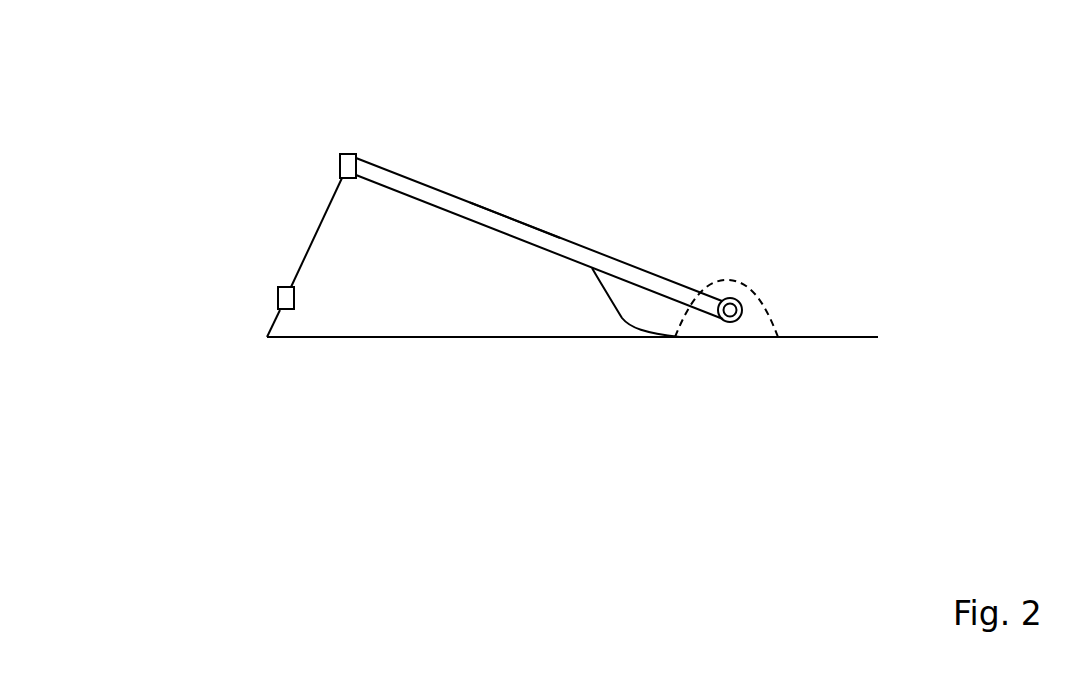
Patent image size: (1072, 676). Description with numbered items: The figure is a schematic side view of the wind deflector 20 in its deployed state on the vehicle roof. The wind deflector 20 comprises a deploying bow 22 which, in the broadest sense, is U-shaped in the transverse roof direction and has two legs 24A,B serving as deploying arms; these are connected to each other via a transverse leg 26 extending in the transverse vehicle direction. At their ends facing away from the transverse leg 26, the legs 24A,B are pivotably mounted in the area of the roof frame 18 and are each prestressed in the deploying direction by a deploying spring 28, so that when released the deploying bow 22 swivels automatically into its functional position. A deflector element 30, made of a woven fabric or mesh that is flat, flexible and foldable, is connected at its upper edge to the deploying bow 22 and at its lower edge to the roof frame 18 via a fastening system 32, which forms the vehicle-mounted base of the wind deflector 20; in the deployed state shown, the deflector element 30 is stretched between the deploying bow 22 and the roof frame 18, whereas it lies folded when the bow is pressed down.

The roof frame 18 is at (397, 337).
The wind deflector 20 is at (341, 144).
The deploying bow 22 is at (491, 196).
The legs 24A,B is at (547, 233).
The transverse leg 26 is at (355, 154).
The deploying spring 28 is at (622, 318).
The deflector element 30 is at (315, 232).
The fastening system 32 is at (284, 292).